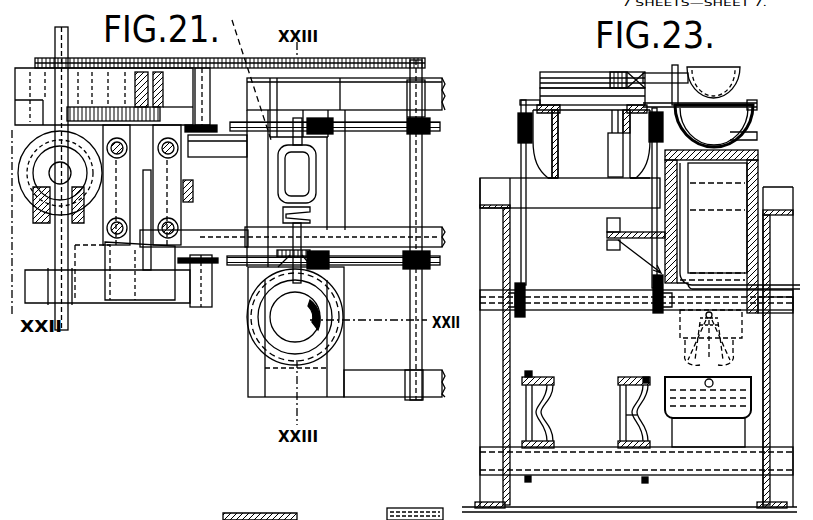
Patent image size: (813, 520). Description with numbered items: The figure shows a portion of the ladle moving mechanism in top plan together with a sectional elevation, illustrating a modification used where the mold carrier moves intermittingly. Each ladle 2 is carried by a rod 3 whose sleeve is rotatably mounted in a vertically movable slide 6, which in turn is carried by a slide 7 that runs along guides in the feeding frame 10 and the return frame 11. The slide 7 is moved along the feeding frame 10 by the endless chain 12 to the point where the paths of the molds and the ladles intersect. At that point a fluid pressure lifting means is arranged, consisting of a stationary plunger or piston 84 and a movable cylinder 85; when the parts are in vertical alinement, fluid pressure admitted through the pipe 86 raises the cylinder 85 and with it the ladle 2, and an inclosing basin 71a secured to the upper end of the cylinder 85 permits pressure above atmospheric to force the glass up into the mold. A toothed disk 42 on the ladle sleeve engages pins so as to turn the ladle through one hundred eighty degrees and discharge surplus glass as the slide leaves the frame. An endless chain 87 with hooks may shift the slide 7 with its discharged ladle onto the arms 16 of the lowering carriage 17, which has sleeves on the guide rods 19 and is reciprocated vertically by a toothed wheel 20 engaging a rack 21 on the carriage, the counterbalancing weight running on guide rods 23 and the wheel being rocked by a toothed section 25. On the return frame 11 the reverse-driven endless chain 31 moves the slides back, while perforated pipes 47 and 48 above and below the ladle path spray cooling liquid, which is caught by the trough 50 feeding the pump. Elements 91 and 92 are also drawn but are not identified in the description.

In FIG. 21, the ladle 2 is at (322, 328).
In FIG. 23, the ladle 2 is at (730, 76).
In FIG. 21, the shaft or rod 3 is at (310, 285).
In FIG. 23, the shaft or rod 3 is at (660, 80).
In FIG. 21, the vertically movable slide 6 is at (323, 185).
In FIG. 23, the vertically movable slide 6 is at (590, 75).
In FIG. 21, the slide 7 is at (315, 213).
In FIG. 23, the slide 7 is at (574, 100).
In FIG. 23, the feeding frame 10 is at (556, 170).
In FIG. 23, the return frame 11 is at (620, 415).
In FIG. 21, the endless chain 12 is at (430, 131).
In FIG. 23, the endless chain 12 is at (523, 113).
In FIG. 21, the arm 16 is at (230, 157).
In FIG. 21, the lowering carriage 17 is at (195, 191).
In FIG. 21, the guide rod 19 is at (170, 237).
In FIG. 21, the toothed wheel 20 is at (137, 200).
In FIG. 21, the rack 21 is at (192, 170).
In FIG. 21, the guide rod 23 is at (115, 138).
In FIG. 21, the toothed section 25 is at (95, 108).
In FIG. 23, the endless chain 31 is at (529, 371).
In FIG. 21, the toothed disk 42 is at (262, 270).
In FIG. 23, the pipe 47 is at (705, 316).
In FIG. 23, the pipe 48 is at (705, 380).
In FIG. 23, the trough 50 is at (700, 418).
In FIG. 21, the inclosing basin 71a is at (268, 353).
In FIG. 23, the inclosing basin 71a is at (753, 110).
In FIG. 23, the stationary plunger or piston 84 is at (750, 244).
In FIG. 21, the movable cylinder 85 is at (262, 342).
In FIG. 23, the movable cylinder 85 is at (758, 157).
In FIG. 23, the pipe 86 is at (688, 258).
In FIG. 21, the endless chain 87 is at (362, 122).
In FIG. 23, the endless chain 87 is at (520, 167).
In FIG. 23, the bracket 91 is at (606, 229).
In FIG. 23, the piston 92 is at (612, 147).